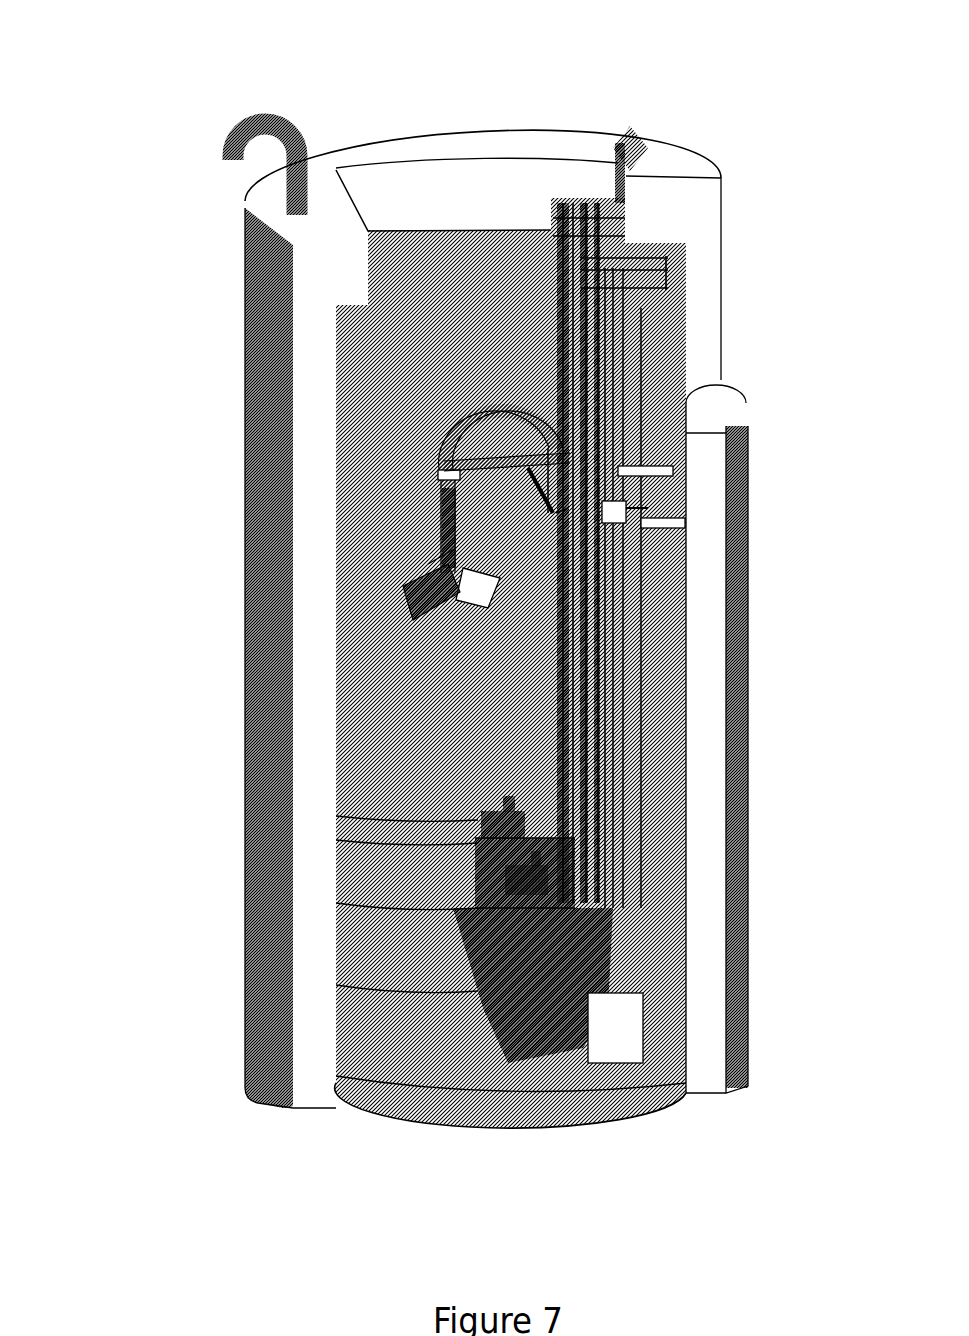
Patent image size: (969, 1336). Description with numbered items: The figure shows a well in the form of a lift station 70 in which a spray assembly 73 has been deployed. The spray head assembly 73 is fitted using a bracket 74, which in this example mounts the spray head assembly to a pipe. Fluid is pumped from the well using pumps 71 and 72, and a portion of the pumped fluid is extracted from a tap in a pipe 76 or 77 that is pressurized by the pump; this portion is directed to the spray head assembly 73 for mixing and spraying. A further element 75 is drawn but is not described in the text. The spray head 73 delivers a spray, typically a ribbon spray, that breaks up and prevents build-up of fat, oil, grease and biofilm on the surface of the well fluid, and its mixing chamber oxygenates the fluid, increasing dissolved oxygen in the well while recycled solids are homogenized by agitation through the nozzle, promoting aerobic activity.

The lift station 70 is at (148, 101).
The pump 71 is at (528, 1000).
The pump 72 is at (490, 848).
The spray assembly 73 is at (460, 555).
The bracket 74 is at (478, 462).
The curved supply pipe 75 is at (462, 412).
The pipe 76 is at (628, 658).
The pipe 77 is at (635, 452).